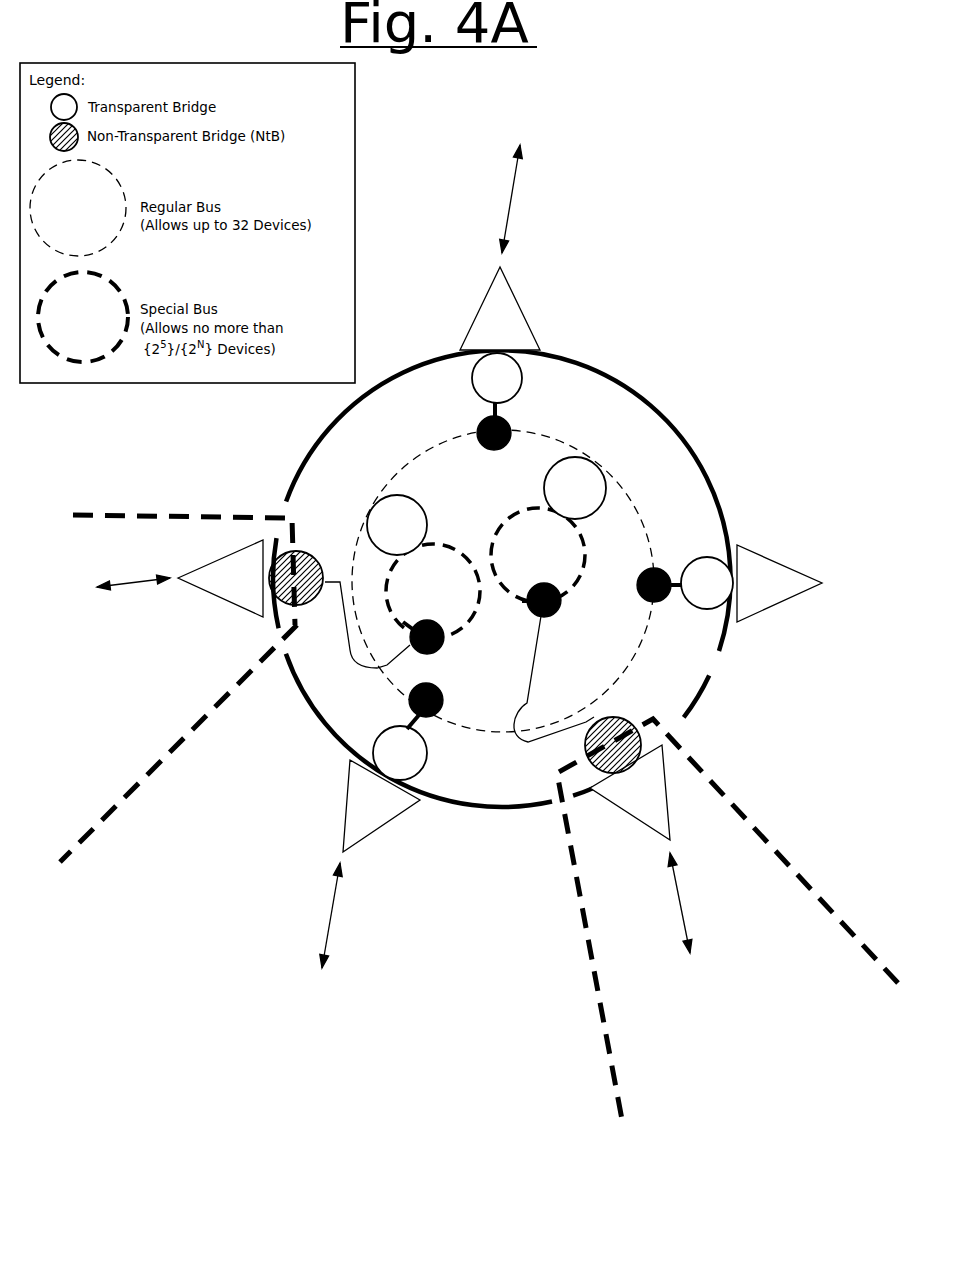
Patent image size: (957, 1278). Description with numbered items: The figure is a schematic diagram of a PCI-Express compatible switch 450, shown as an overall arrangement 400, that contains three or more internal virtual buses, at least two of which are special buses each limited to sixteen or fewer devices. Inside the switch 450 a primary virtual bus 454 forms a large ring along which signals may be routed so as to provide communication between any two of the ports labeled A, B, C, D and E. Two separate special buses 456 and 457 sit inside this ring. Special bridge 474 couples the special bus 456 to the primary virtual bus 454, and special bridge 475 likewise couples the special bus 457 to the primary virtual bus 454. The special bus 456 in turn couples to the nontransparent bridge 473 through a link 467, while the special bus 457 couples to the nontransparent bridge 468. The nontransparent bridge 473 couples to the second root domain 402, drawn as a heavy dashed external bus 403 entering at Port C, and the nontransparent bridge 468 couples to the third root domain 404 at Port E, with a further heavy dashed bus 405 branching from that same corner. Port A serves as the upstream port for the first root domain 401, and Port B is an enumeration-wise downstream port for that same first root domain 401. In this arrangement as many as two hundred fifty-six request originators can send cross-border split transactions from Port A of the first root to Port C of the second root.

The bus topology system 400 is at (840, 119).
The Root#1 401 is at (345, 1051).
The Root#2 domain 402 is at (739, 1061).
The special bus 403 is at (608, 1052).
The Root#3 domain 404 is at (136, 666).
The special bus 405 is at (173, 735).
The switch 450 is at (622, 382).
The primary virtual bus 454 is at (643, 647).
The special bus 456 is at (524, 563).
The special bus 457 is at (419, 600).
The link connection 467 is at (535, 750).
The nontransparent bridge 468 is at (312, 568).
The nontransparent bridge 473 is at (622, 698).
The special bridge 474 is at (575, 488).
The special bridge 475 is at (397, 525).